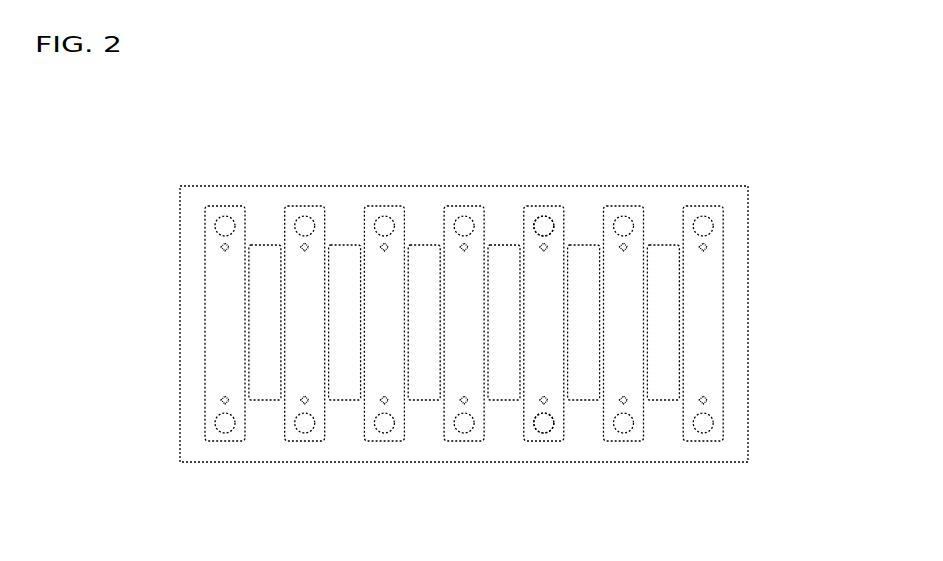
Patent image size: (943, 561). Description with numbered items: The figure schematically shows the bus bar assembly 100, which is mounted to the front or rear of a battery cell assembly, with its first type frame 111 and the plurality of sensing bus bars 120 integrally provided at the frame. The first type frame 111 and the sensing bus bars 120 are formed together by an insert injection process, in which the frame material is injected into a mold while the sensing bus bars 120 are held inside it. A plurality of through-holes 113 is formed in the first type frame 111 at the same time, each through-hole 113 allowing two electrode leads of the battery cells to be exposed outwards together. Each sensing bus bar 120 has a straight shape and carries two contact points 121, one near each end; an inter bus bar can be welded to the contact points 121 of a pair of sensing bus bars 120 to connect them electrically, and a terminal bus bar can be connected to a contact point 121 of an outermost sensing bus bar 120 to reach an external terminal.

The bus bar assembly 100 is at (197, 117).
The first type frame 111 is at (195, 443).
The sensing bus bar 120 is at (451, 208).
The contact point 121 is at (542, 225).
The through-hole 113 is at (663, 322).